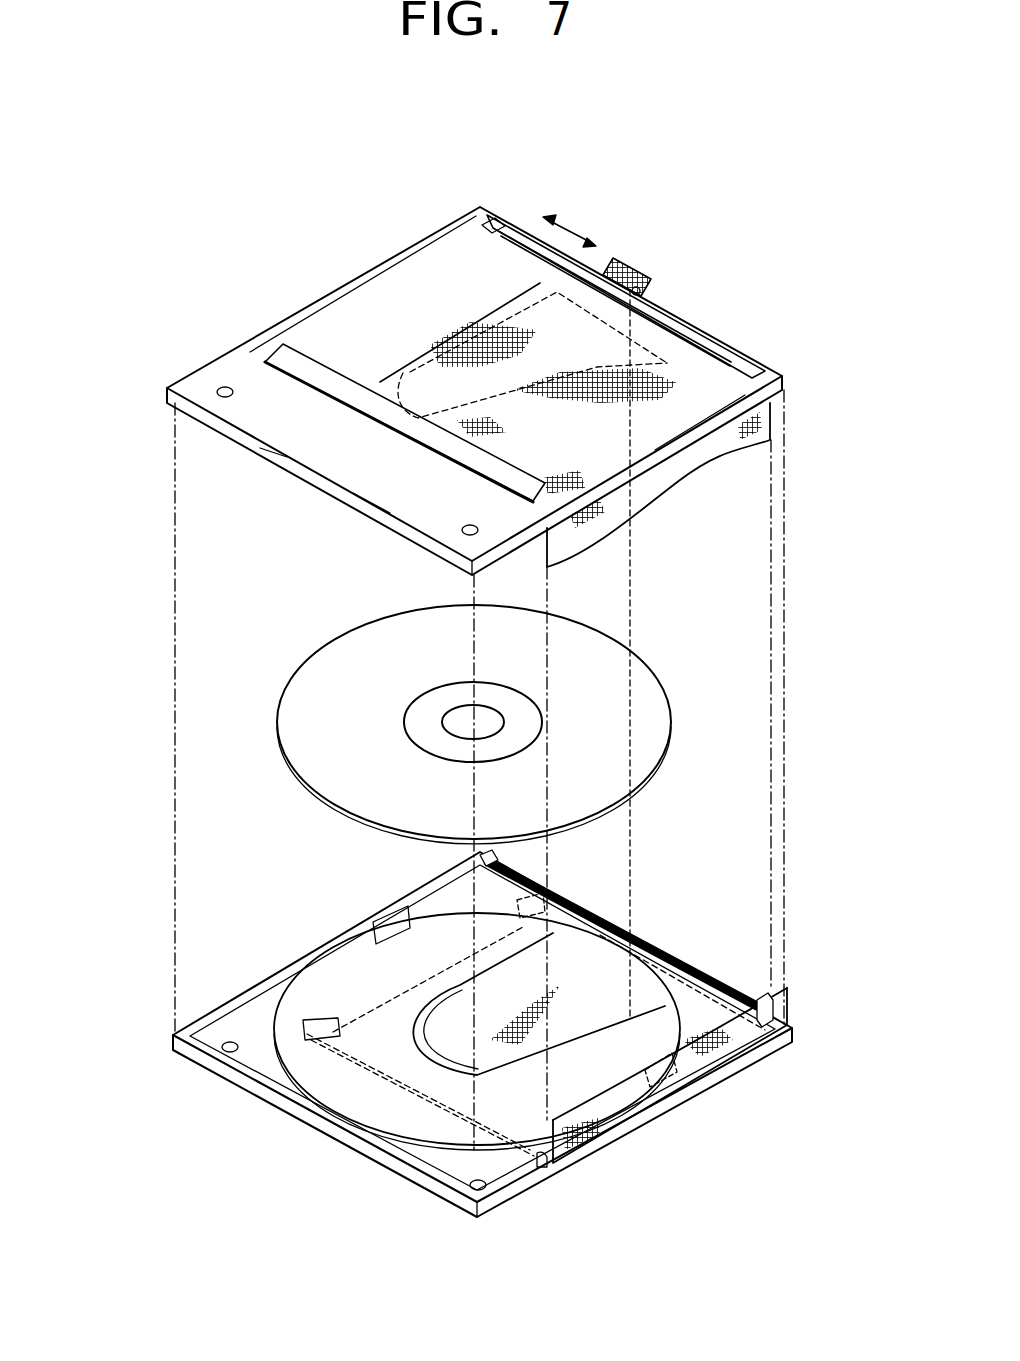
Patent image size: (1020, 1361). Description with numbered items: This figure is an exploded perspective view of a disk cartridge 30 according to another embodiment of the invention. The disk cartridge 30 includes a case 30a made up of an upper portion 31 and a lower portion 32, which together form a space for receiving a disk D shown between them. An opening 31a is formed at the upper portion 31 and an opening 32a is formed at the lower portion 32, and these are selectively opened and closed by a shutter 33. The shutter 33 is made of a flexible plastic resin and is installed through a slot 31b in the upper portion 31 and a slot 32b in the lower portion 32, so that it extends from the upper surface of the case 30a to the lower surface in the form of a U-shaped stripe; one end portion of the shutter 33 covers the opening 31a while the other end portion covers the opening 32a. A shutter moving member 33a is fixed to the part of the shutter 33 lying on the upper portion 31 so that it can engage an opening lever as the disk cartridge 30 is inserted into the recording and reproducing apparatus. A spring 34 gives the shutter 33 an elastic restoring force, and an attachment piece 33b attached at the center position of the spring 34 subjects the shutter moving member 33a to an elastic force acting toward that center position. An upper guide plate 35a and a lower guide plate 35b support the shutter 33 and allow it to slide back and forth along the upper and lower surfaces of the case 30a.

The disk cartridge 30 is at (120, 328).
The case 30a is at (167, 403).
The upper portion 31 is at (225, 365).
The opening 31a is at (538, 303).
The slot 31b is at (543, 507).
The lower portion 32 is at (232, 1075).
The opening 32a is at (463, 995).
The slot 32b is at (535, 1162).
The shutter 33 is at (670, 480).
The shutter moving member 33a is at (637, 272).
The attachment piece 33b is at (653, 295).
The spring 34 is at (728, 977).
The upper guide plate 35a is at (473, 215).
The lower guide plate 35b is at (547, 883).
The disk D is at (322, 683).